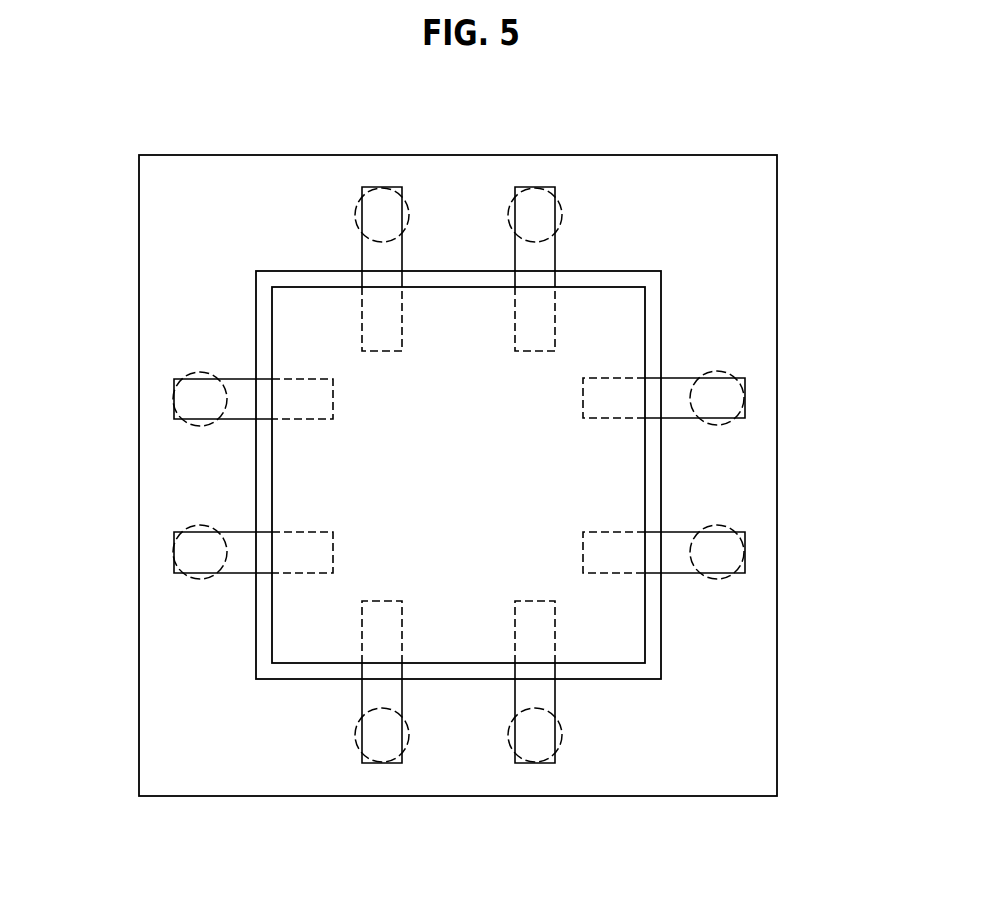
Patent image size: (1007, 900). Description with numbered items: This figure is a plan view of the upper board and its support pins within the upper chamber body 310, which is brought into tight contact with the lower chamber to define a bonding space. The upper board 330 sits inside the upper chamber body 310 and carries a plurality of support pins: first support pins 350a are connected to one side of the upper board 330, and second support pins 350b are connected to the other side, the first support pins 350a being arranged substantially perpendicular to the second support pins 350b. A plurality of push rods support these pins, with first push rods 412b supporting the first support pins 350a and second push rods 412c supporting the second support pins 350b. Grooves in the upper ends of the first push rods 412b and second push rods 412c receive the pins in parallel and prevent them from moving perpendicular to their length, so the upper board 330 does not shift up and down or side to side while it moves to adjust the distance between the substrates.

The upper chamber body 310 is at (777, 243).
The upper board 330 is at (645, 305).
The first support pins 350a is at (233, 421).
The second support pins 350b is at (557, 253).
The first push rods 412b is at (193, 373).
The second push rods 412c is at (508, 215).